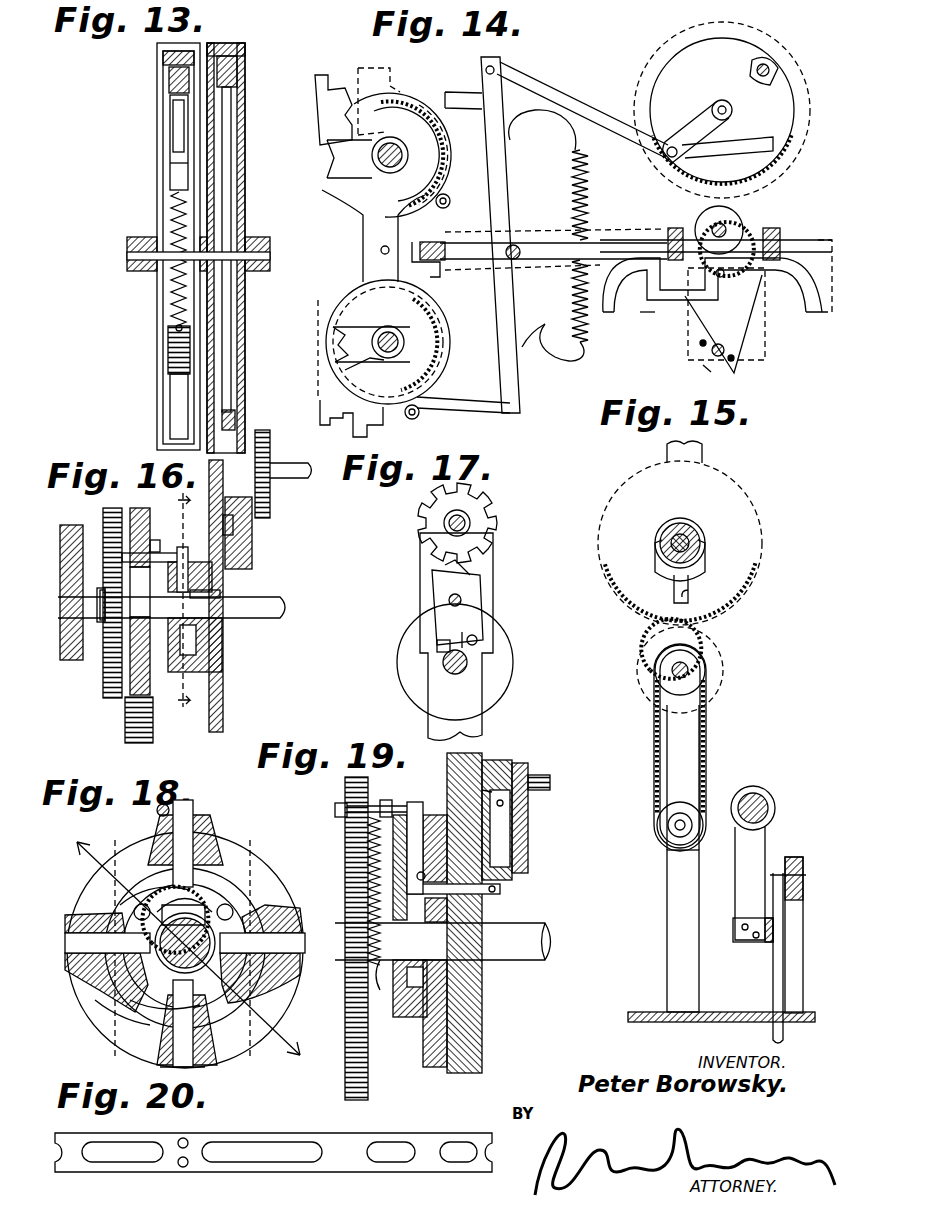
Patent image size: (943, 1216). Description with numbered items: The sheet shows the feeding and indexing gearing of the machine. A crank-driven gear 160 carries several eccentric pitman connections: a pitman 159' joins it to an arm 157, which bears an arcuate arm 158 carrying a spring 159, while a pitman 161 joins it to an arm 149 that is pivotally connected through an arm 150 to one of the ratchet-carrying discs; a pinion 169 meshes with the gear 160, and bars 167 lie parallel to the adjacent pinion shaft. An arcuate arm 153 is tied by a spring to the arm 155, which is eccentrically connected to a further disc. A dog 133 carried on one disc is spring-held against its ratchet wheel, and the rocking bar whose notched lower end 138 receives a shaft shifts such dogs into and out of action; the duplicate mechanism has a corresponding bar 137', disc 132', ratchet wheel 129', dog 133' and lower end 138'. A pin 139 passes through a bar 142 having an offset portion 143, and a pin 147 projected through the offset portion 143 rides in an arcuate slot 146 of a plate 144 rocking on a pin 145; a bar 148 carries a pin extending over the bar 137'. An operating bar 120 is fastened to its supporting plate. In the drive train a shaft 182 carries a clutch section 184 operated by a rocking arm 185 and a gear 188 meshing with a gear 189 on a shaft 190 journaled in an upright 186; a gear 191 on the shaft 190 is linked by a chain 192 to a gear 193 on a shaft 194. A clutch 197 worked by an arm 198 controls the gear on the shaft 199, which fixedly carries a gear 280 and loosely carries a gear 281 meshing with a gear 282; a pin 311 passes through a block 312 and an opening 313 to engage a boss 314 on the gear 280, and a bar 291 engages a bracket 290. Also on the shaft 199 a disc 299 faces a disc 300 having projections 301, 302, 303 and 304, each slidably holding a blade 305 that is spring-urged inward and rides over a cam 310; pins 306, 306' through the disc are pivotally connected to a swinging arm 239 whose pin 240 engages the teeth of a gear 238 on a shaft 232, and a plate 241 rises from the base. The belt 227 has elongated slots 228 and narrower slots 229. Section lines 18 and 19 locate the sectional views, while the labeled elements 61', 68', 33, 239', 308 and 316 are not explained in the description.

In FIG. 13, the arm 157 is at (162, 105).
In FIG. 14, the arm 157 is at (500, 80).
In FIG. 13, the pitman 159' is at (150, 82).
In FIG. 14, the pitman 159' is at (582, 103).
In FIG. 13, the arcuate arm 153 is at (178, 147).
In FIG. 13, the spring 159 is at (145, 268).
In FIG. 14, the spring 159 is at (569, 235).
In FIG. 13, the arcuate arm 158 is at (228, 311).
In FIG. 14, the arcuate arm 158 is at (558, 362).
In FIG. 13, the pitman 161 is at (245, 65).
In FIG. 13, the arm 149 is at (238, 90).
In FIG. 14, the arm 149 is at (447, 247).
In FIG. 13, the arm 155 is at (236, 108).
In FIG. 14, the arm 155 is at (458, 100).
In FIG. 13, the arm 150 is at (238, 410).
In FIG. 14, the arm 150 is at (468, 412).
In FIG. 13, the operating bar 120 is at (270, 250).
In FIG. 14, the lower end of bar 138 is at (357, 94).
In FIG. 14, the lower guide plate 138' is at (368, 372).
In FIG. 14, the toothed sector 132' is at (365, 248).
In FIG. 14, the upper shaft 61' is at (349, 173).
In FIG. 14, the lower shaft 68' is at (342, 358).
In FIG. 14, the pawl 129' is at (330, 390).
In FIG. 14, the bar 137' is at (369, 236).
In FIG. 14, the pin 139 is at (447, 277).
In FIG. 14, the dog 133 is at (469, 185).
In FIG. 14, the lower pivot pin 133' is at (454, 395).
In FIG. 14, the bar 148 is at (546, 272).
In FIG. 14, the bar 142 is at (795, 250).
In FIG. 14, the offset portion 143 is at (655, 310).
In FIG. 14, the pinion 169 is at (748, 224).
In FIG. 14, the bars 167 is at (675, 238).
In FIG. 14, the gear 160 is at (781, 60).
In FIG. 14, the plate 144 is at (748, 353).
In FIG. 14, the arcuate slot 146 is at (748, 325).
In FIG. 14, the pin 147 is at (705, 306).
In FIG. 14, the pin 145 is at (712, 370).
In FIG. 15, the upright 186 is at (700, 452).
In FIG. 15, the gear 188 is at (720, 605).
In FIG. 15, the clutch section 184 is at (692, 535).
In FIG. 15, the shaft 182 is at (702, 548).
In FIG. 15, the arm 185 is at (702, 580).
In FIG. 15, the gear 189 is at (712, 650).
In FIG. 15, the shaft 190 is at (672, 668).
In FIG. 15, the gear 191 is at (672, 700).
In FIG. 15, the chain 192 is at (654, 755).
In FIG. 15, the gear 193 is at (662, 815).
In FIG. 15, the shaft 194 is at (674, 838).
In FIG. 15, the base 33 is at (718, 1022).
In FIG. 15, the clutch 197 is at (762, 797).
In FIG. 15, the shaft 199 is at (770, 815).
In FIG. 16, the shaft 199 is at (262, 614).
In FIG. 17, the shaft 199 is at (467, 665).
In FIG. 18, the shaft 199 is at (200, 985).
In FIG. 19, the shaft 199 is at (530, 935).
In FIG. 15, the arm 198 is at (740, 855).
In FIG. 15, the bracket 290 is at (760, 945).
In FIG. 15, the bar 291 is at (775, 968).
In FIG. 16, the gear 280 is at (108, 660).
In FIG. 16, the gear 281 is at (115, 700).
In FIG. 19, the gear 281 is at (355, 1055).
In FIG. 16, the gear 282 is at (128, 740).
In FIG. 16, the opening 313 is at (140, 545).
In FIG. 16, the boss 314 is at (108, 535).
In FIG. 16, the pin 311 is at (152, 555).
In FIG. 19, the pin 311 is at (388, 802).
In FIG. 16, the disc 300 is at (195, 657).
In FIG. 18, the disc 300 is at (265, 870).
In FIG. 19, the disc 300 is at (440, 1025).
In FIG. 16, the disc 299 is at (215, 680).
In FIG. 18, the disc 299 is at (120, 1000).
In FIG. 19, the disc 299 is at (410, 980).
In FIG. 16, the blade 305 is at (190, 590).
In FIG. 18, the blade 305 is at (190, 820).
In FIG. 19, the blade 305 is at (415, 808).
In FIG. 16, the pin 306 is at (248, 595).
In FIG. 17, the pin 306 is at (407, 654).
In FIG. 19, the pin 306 is at (492, 889).
In FIG. 16, the plate 241 is at (212, 720).
In FIG. 17, the plate 241 is at (465, 718).
In FIG. 19, the plate 241 is at (475, 1045).
In FIG. 16, the arm 239 is at (273, 533).
In FIG. 17, the arm 239 is at (494, 607).
In FIG. 19, the arm 239 is at (535, 820).
In FIG. 16, the pin 240 is at (232, 520).
In FIG. 17, the pin 240 is at (470, 575).
In FIG. 19, the pin 240 is at (538, 790).
In FIG. 16, the shaft 232 is at (270, 470).
In FIG. 17, the shaft 232 is at (460, 523).
In FIG. 16, the gear 238 is at (270, 497).
In FIG. 17, the gear 238 is at (470, 510).
In FIG. 16, the section line 18 is at (189, 600).
In FIG. 17, the pawl pin 239' is at (511, 636).
In FIG. 19, the pawl pin 239' is at (550, 818).
In FIG. 18, the projection 302 is at (210, 828).
In FIG. 19, the projection 302 is at (508, 822).
In FIG. 18, the projection 301 is at (280, 920).
In FIG. 18, the projection 303 is at (150, 985).
In FIG. 18, the projection 304 is at (100, 985).
In FIG. 18, the jaw 308 is at (215, 1058).
In FIG. 18, the cam 310 is at (200, 895).
In FIG. 18, the pin 306' is at (115, 903).
In FIG. 18, the pin 316 is at (232, 915).
In FIG. 19, the pin 316 is at (378, 1000).
In FIG. 18, the section line 19 is at (195, 933).
In FIG. 19, the block 312 is at (340, 810).
In FIG. 20, the belt 227 is at (337, 1152).
In FIG. 20, the elongated slots 228 is at (272, 1147).
In FIG. 20, the narrower slots 229 is at (445, 1150).